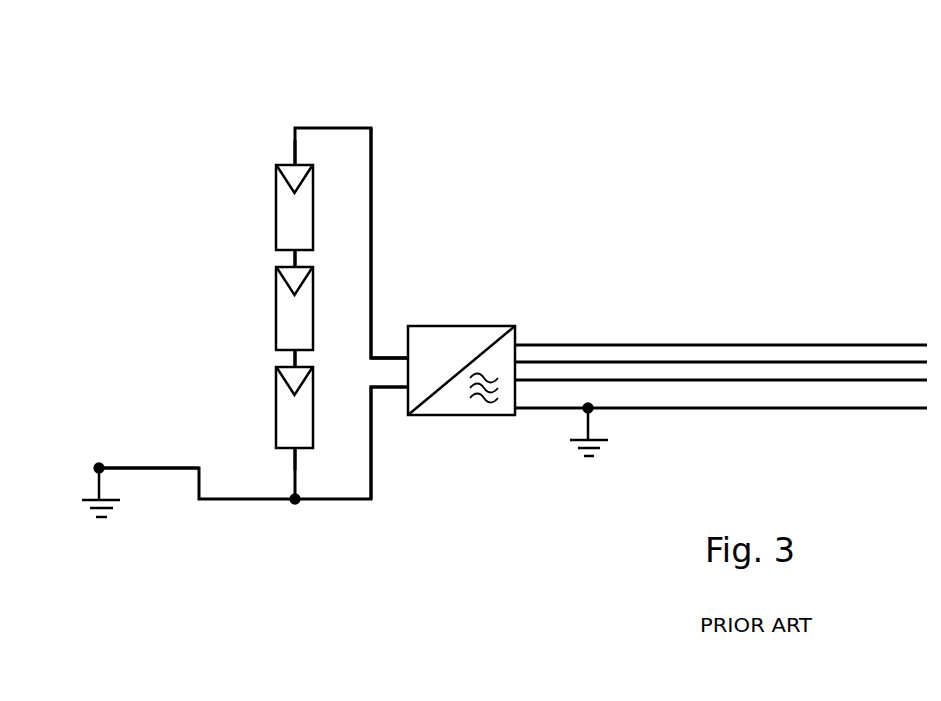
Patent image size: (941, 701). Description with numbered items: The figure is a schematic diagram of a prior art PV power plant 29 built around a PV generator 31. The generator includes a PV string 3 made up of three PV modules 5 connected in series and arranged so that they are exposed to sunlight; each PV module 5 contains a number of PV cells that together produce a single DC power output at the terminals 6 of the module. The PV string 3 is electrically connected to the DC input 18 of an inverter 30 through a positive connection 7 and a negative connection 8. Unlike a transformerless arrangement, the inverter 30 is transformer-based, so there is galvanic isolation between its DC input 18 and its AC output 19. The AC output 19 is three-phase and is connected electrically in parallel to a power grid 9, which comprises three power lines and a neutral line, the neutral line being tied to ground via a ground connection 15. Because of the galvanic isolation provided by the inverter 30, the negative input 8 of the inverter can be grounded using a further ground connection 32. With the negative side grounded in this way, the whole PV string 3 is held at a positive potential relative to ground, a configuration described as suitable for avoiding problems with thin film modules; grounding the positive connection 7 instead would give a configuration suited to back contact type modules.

The PV string 3 is at (197, 108).
The PV module 5 is at (276, 200).
The terminals 6 is at (296, 143).
The positive connection 7 is at (372, 326).
The negative connection 8 is at (374, 406).
The power grid 9 is at (866, 344).
The ground connection 15 is at (588, 420).
The DC input 18 is at (397, 352).
The AC output 19 is at (522, 366).
The power plant 29 is at (339, 565).
The inverter 30 is at (481, 326).
The PV generator 31 is at (512, 239).
The ground connection 32 is at (100, 462).